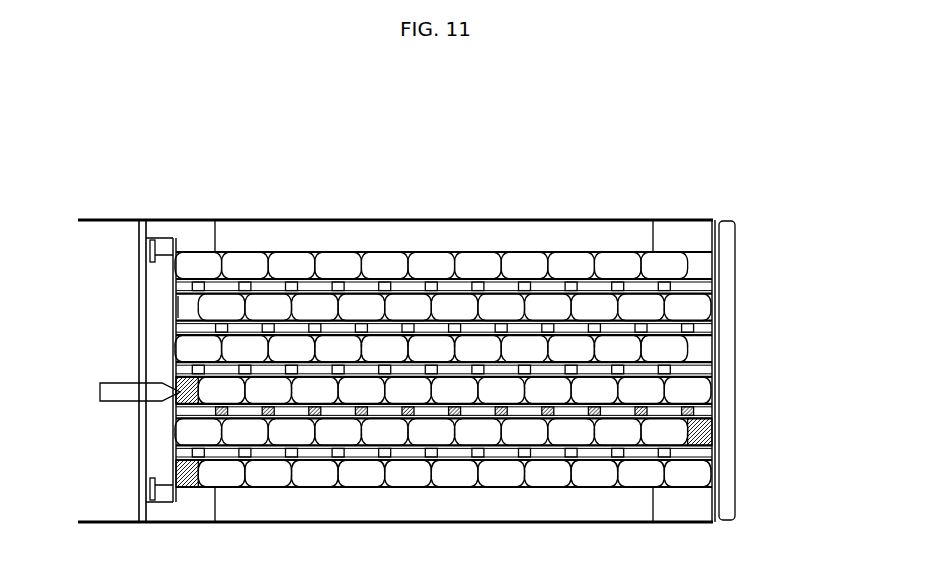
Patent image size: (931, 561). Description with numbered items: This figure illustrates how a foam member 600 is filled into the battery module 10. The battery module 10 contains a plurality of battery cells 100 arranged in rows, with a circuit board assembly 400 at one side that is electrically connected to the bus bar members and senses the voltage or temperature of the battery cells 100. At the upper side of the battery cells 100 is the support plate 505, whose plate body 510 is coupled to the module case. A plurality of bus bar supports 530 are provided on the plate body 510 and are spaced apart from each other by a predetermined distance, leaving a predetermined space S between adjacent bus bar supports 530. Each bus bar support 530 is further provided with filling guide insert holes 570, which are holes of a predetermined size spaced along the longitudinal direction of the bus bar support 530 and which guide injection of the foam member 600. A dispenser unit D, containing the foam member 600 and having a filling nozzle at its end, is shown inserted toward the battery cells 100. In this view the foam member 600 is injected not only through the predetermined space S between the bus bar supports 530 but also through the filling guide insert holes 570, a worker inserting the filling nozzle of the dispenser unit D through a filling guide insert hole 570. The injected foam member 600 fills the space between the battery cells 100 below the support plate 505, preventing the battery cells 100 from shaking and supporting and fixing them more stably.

The battery module 10 is at (184, 146).
The predetermined space S is at (176, 304).
The bus bar support 530 is at (260, 292).
The filling guide insert hole 570 is at (290, 291).
The battery cell 100 is at (383, 270).
The circuit board assembly 400 is at (128, 303).
The dispenser unit D is at (125, 383).
The foam member 600 is at (172, 399).
The support plate 505 is at (746, 365).
The plate body 510 is at (725, 413).